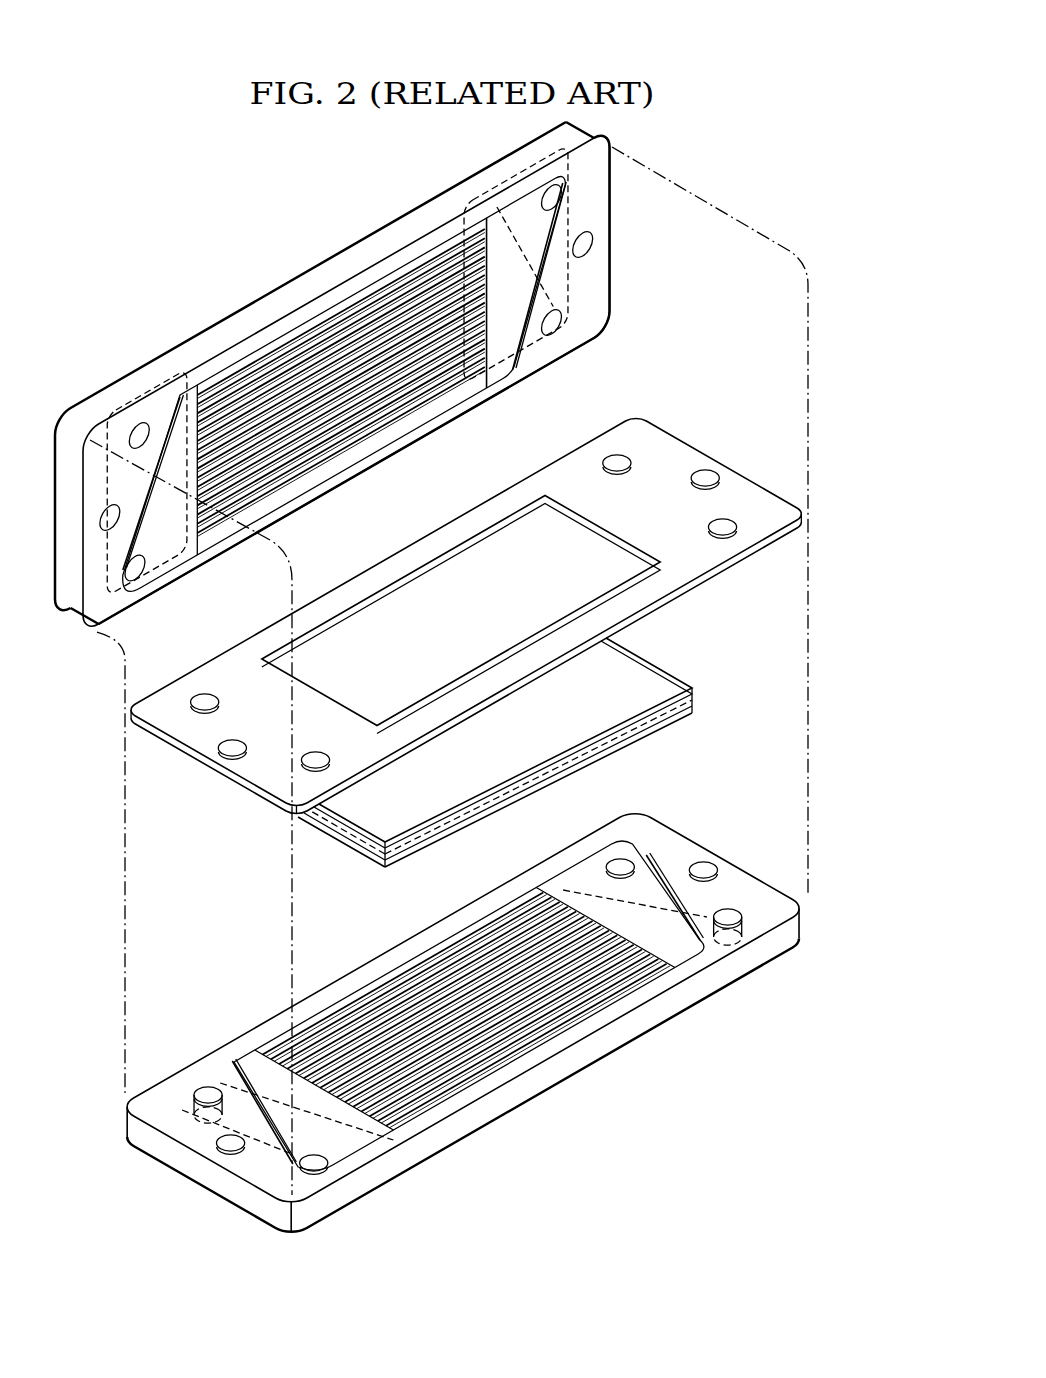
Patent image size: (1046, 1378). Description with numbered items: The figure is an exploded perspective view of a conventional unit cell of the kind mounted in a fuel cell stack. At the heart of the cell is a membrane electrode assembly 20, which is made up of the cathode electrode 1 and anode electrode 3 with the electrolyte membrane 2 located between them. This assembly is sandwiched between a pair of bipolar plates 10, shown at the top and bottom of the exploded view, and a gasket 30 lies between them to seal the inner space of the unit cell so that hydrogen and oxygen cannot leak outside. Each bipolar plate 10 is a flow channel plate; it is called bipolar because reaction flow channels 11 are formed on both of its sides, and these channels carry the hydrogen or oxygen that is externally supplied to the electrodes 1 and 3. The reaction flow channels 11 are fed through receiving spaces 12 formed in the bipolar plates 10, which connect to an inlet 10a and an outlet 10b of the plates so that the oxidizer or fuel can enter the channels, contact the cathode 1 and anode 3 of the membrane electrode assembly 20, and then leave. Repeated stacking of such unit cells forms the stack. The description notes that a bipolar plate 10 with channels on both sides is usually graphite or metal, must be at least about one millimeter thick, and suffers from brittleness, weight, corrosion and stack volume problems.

The cathode electrode 1 is at (650, 712).
The electrolyte membrane 2 is at (692, 695).
The anode electrode 3 is at (673, 678).
The bipolar plate 10 is at (205, 297).
The inlet 10a is at (136, 566).
The outlet 10b is at (553, 198).
The reaction flow channels 11 is at (307, 340).
The receiving spaces 12 is at (503, 243).
The membrane electrode assembly 20 is at (528, 740).
The gasket 30 is at (722, 442).